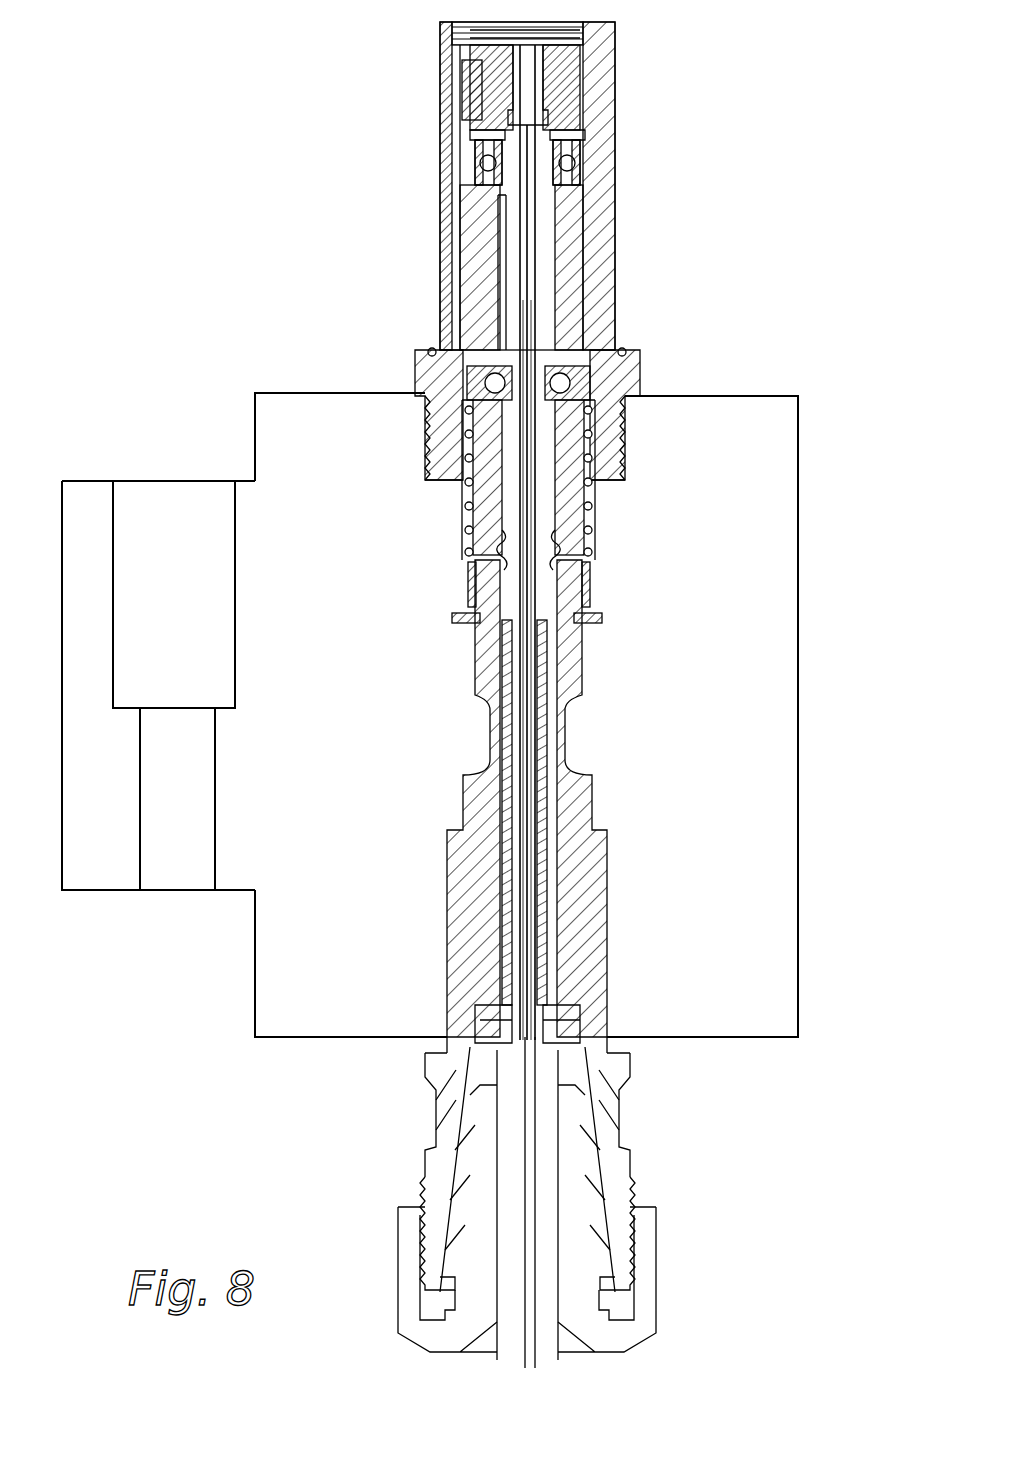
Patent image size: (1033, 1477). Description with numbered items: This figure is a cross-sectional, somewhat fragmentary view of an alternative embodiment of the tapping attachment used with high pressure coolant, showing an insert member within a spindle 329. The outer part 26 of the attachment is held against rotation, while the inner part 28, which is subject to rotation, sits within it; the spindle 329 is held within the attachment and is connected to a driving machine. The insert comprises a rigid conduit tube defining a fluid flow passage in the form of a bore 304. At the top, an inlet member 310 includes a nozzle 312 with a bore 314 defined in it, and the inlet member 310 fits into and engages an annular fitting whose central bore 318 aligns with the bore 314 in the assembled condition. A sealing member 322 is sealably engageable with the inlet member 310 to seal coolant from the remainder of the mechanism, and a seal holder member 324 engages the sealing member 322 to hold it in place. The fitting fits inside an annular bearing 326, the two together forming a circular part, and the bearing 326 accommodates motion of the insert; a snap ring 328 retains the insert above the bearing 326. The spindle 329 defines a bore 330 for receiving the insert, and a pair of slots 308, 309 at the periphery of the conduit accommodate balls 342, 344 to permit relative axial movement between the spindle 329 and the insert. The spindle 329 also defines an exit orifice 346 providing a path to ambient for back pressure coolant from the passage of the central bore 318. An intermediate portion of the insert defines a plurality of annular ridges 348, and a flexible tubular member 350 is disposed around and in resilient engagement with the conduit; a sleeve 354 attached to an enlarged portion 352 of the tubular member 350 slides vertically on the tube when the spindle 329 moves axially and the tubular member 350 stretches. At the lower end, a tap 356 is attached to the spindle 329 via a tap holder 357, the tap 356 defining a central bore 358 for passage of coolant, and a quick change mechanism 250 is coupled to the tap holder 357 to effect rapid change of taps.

The outer part 26 is at (180, 481).
The inner part 28 is at (293, 487).
The quick change mechanism 250 is at (672, 1313).
The bore 304 is at (530, 290).
The slot 308 is at (626, 430).
The slot 309 is at (487, 378).
The inlet member 310 is at (600, 56).
The nozzle 312 is at (600, 115).
The bore 314 is at (462, 135).
The central bore 318 is at (456, 58).
The sealing member 322 is at (600, 138).
The seal holder member 324 is at (460, 95).
The bearing 326 is at (457, 153).
The snap ring 328 is at (598, 160).
The spindle 329 is at (648, 236).
The bore 330 is at (632, 395).
The ball 342 is at (612, 345).
The ball 344 is at (492, 362).
The exit orifice 346 is at (457, 237).
The annular ridges 348 is at (545, 548).
The flexible tubular member 350 is at (560, 790).
The enlarged portion 352 is at (598, 1042).
The sleeve 354 is at (505, 1033).
The tap 356 is at (560, 1224).
The tap holder 357 is at (478, 1100).
The central bore 358 is at (430, 1173).